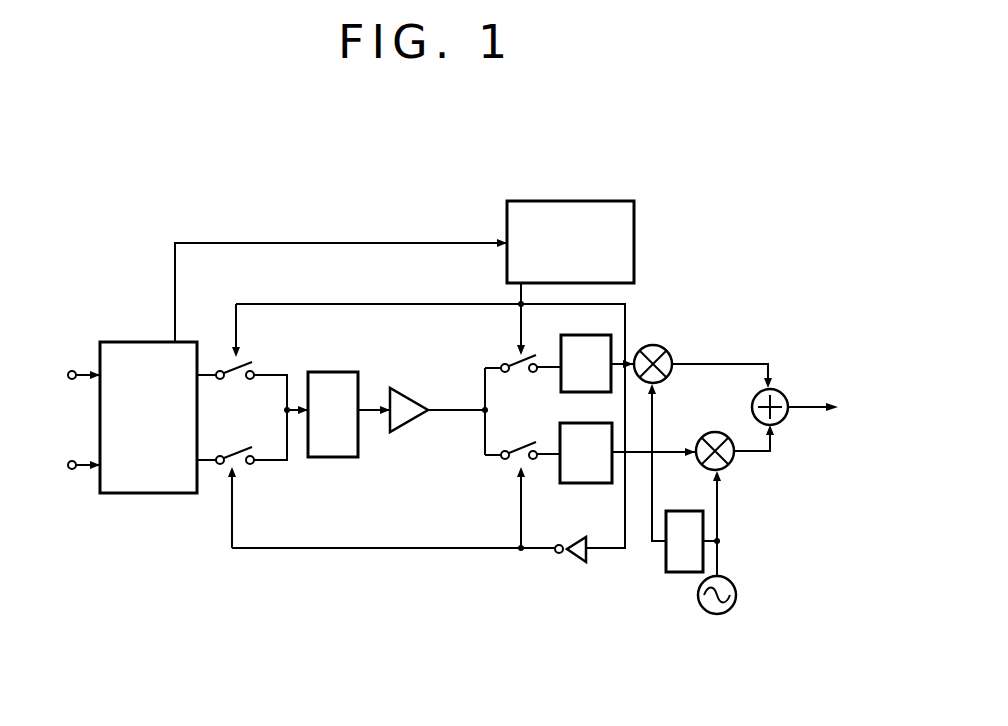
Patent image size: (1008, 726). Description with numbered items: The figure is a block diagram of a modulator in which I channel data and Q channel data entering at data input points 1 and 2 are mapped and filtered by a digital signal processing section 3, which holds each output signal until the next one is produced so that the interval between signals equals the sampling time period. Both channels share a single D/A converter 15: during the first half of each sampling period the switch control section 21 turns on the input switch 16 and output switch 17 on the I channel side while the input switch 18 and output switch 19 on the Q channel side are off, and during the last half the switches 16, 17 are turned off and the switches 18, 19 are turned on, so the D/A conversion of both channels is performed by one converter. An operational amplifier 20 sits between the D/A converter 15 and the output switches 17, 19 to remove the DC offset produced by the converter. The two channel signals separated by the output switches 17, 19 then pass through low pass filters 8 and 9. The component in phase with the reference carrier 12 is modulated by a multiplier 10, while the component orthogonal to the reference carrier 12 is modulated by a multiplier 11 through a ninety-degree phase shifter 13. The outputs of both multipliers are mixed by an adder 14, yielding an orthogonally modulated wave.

The data input point 1 is at (72, 370).
The data input point 2 is at (72, 460).
The digital signal processing section 3 is at (147, 342).
The low pass filter 8 is at (587, 335).
The low pass filter 9 is at (587, 483).
The multiplier 10 is at (667, 350).
The multiplier 11 is at (708, 434).
The reference carrier 12 is at (736, 594).
The 90° phase shifter 13 is at (683, 511).
The adder 14 is at (782, 394).
The D/A converter 15 is at (335, 372).
The input switch 16 is at (255, 366).
The output switch 17 is at (524, 358).
The input switch 18 is at (246, 450).
The output switch 19 is at (520, 446).
The operational amplifier 20 is at (408, 390).
The switch control section 21 is at (634, 241).